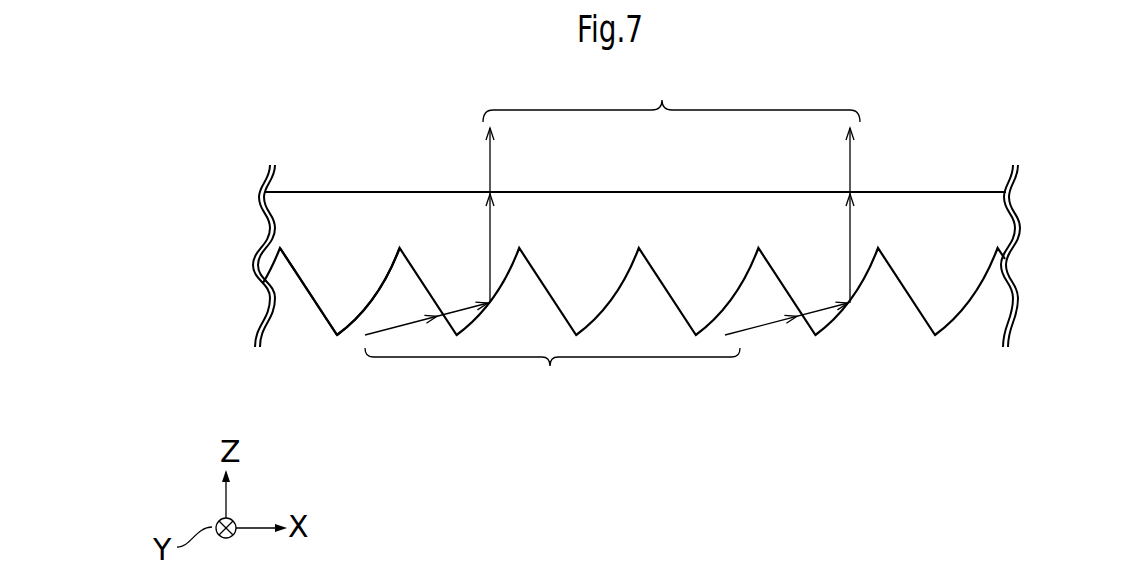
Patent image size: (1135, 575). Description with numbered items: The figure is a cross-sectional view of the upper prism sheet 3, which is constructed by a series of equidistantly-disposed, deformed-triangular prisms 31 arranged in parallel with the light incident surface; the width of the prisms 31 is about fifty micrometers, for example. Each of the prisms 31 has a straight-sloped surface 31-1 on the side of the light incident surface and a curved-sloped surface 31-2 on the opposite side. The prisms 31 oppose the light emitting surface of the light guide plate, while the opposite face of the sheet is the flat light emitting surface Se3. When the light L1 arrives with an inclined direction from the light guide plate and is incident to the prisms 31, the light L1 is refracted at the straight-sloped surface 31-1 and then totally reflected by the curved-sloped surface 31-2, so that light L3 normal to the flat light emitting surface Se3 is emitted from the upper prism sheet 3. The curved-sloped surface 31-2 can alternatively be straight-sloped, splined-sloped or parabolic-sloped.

The upper prism sheet 3 is at (368, 119).
The prism 31 is at (400, 447).
The straight-sloped surface 31-1 is at (310, 300).
The curved-sloped surface 31-2 is at (350, 330).
The flat light emitting surface of the upper prism sheet Se3 is at (908, 188).
The light with an inclined direction L1 is at (606, 353).
The light normal to the flat light emitting surface L3 is at (671, 186).